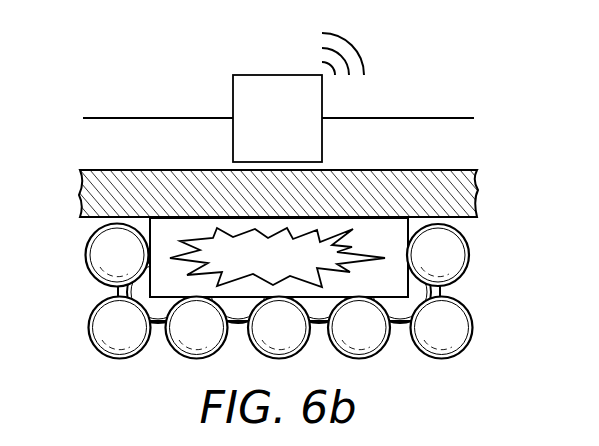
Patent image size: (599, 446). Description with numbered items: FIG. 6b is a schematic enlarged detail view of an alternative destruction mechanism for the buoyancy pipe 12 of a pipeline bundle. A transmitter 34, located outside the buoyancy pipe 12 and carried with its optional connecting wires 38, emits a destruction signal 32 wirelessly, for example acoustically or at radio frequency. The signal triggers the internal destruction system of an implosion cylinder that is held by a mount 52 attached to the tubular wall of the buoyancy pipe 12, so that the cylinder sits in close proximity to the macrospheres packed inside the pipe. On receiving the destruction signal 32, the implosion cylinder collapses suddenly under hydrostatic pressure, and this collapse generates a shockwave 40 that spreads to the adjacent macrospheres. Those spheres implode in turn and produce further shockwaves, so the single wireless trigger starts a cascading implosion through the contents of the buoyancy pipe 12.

The buoyancy pipe 12 is at (85, 192).
The destruction signal 32 is at (356, 49).
The transmitter 34 is at (257, 75).
The connecting wires 38 is at (105, 118).
The shockwave 40 is at (330, 254).
The mount 52 is at (164, 225).